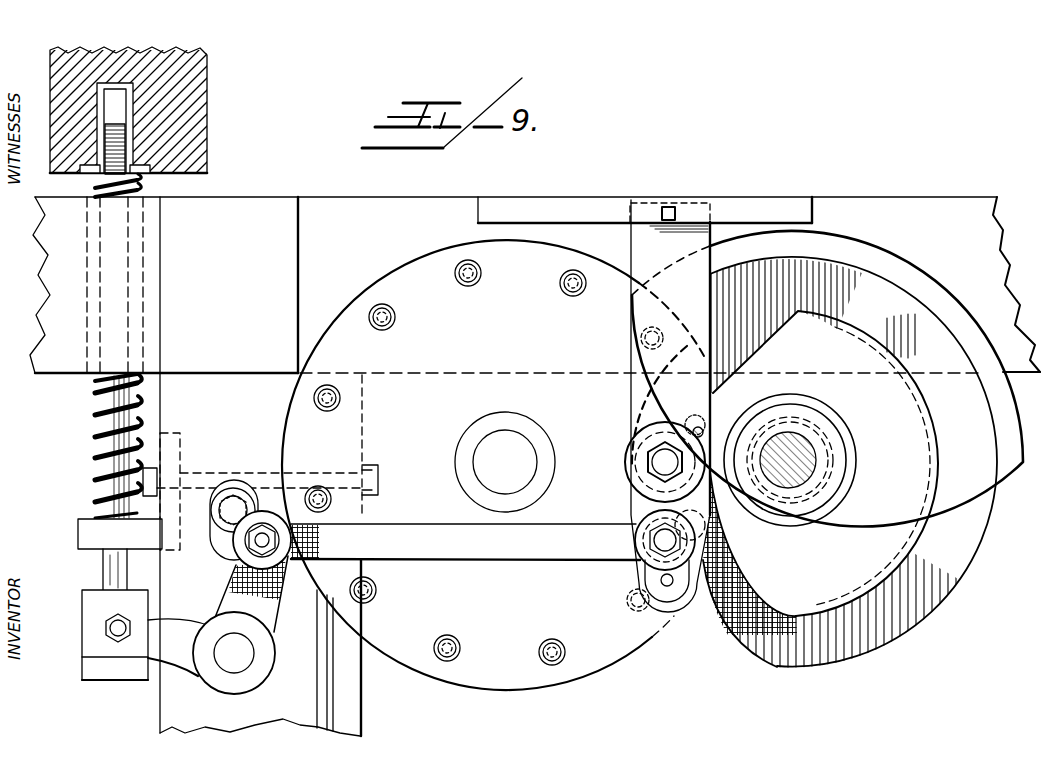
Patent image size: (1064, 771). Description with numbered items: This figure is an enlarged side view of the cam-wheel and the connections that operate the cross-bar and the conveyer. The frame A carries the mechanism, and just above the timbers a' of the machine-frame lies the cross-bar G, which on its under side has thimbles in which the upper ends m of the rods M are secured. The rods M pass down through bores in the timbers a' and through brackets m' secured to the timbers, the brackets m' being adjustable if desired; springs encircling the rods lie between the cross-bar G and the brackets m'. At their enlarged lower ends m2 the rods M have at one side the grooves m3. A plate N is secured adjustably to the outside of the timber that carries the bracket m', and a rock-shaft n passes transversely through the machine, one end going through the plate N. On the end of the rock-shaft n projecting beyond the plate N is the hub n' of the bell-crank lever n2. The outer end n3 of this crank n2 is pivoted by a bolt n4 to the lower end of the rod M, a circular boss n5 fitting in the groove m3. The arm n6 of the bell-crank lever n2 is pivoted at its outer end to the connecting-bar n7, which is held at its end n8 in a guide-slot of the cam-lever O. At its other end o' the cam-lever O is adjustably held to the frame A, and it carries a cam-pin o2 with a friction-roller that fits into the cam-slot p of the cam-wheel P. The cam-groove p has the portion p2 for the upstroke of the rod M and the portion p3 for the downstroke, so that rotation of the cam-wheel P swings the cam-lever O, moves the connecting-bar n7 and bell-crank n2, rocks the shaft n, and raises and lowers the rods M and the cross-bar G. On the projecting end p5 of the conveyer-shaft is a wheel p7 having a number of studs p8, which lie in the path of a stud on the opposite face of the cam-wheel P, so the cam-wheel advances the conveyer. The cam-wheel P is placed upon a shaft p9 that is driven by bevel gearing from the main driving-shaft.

The frame A is at (879, 199).
The timbers a' is at (50, 285).
The cross-bar G is at (159, 110).
The upper ends of rods m is at (173, 149).
The rods M is at (110, 382).
The brackets m' is at (101, 554).
The lower ends of rods m2 is at (97, 672).
The grooves m3 is at (98, 463).
The plate N is at (260, 554).
The rock-shaft n is at (255, 666).
The hub n' is at (245, 653).
The bell-crank lever n2 is at (194, 699).
The outer end of crank n3 is at (179, 647).
The bolt n4 is at (118, 632).
The circular boss n5 is at (138, 682).
The arm of bell-crank lever n6 is at (256, 556).
The connecting-bar n7 is at (436, 540).
The end of connecting-bar n8 is at (653, 540).
The cam-lever O is at (667, 413).
The end of cam-lever o' is at (645, 196).
The cam-pin o2 is at (708, 425).
The cam-wheel P is at (1010, 512).
The cam-slot p is at (963, 447).
The upstroke portion of cam-groove p2 is at (745, 580).
The downstroke portion of cam-groove p3 is at (760, 340).
The projecting end of conveyer-shaft p5 is at (505, 462).
The wheel p7 is at (493, 465).
The studs p8 is at (479, 279).
The shaft p9 is at (805, 458).